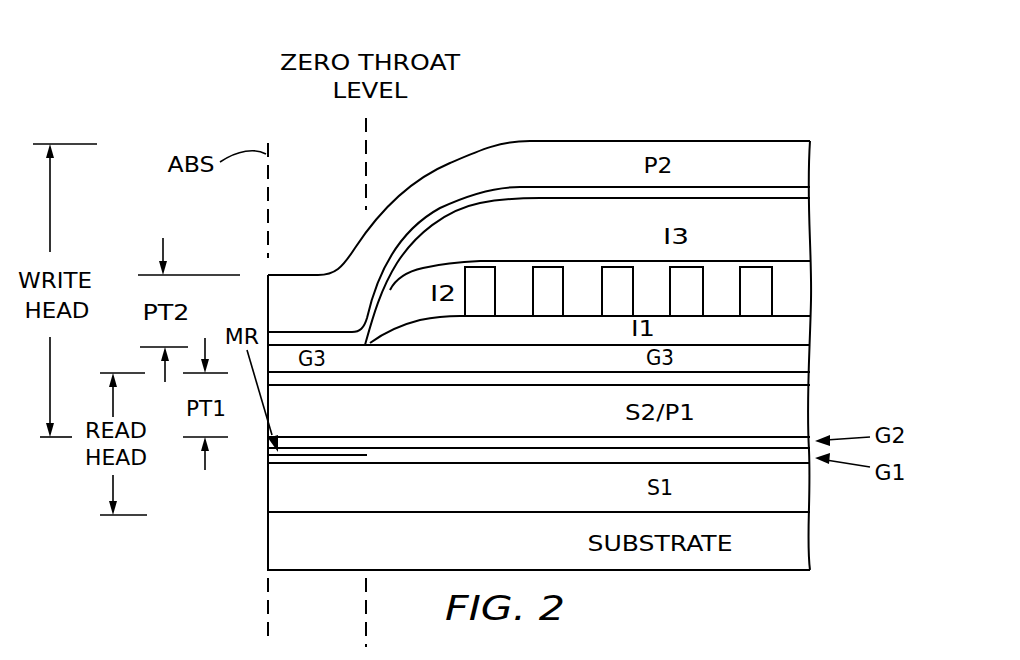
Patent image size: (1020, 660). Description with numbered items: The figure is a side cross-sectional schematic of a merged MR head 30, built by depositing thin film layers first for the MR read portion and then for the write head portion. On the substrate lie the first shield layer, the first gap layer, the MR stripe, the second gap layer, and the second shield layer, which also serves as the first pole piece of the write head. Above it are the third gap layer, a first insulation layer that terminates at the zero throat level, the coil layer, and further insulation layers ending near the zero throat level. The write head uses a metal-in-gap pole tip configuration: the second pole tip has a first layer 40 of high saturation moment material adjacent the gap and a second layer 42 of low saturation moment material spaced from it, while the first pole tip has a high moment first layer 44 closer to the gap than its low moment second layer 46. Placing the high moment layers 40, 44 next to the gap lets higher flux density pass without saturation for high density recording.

The merged MR head 30 is at (686, 98).
The first layer of high saturation moment magnetic material 40 is at (282, 338).
The second layer of low saturation moment magnetic material 42 is at (278, 302).
The first layer of high saturation moment magnetic material 44 is at (295, 380).
The second layer of low saturation moment magnetic material 46 is at (319, 409).